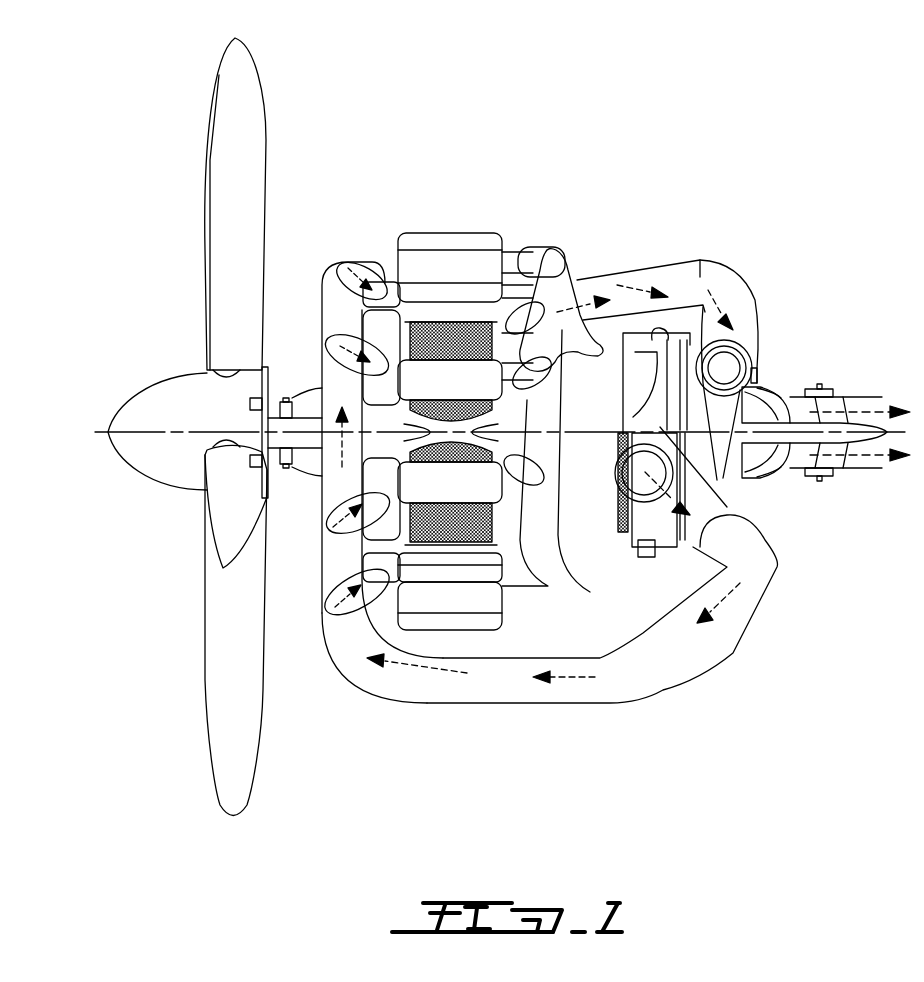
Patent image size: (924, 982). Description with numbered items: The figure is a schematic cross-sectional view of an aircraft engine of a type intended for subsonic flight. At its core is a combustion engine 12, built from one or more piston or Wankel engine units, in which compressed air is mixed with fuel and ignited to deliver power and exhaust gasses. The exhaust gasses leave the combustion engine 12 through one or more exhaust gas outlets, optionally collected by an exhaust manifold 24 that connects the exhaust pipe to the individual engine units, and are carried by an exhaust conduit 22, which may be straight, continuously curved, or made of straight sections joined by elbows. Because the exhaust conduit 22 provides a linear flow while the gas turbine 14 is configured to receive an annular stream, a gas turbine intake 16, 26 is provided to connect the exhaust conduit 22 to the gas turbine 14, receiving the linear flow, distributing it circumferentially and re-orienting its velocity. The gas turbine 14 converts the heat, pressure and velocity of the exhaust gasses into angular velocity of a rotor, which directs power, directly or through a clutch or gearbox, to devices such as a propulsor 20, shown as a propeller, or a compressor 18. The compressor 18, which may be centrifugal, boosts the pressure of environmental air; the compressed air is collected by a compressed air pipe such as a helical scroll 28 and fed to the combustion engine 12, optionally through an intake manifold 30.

The combustion engine 12 is at (421, 608).
The gas turbine 14 is at (823, 500).
The gas turbine intake 16 is at (742, 393).
The compressor 18 is at (647, 432).
The propulsor 20 is at (233, 698).
The exhaust conduit 22 is at (740, 275).
The exhaust manifold 24 is at (555, 268).
The gas turbine intake 26 is at (635, 683).
The helical scroll 28 is at (620, 440).
The intake manifold 30 is at (306, 568).